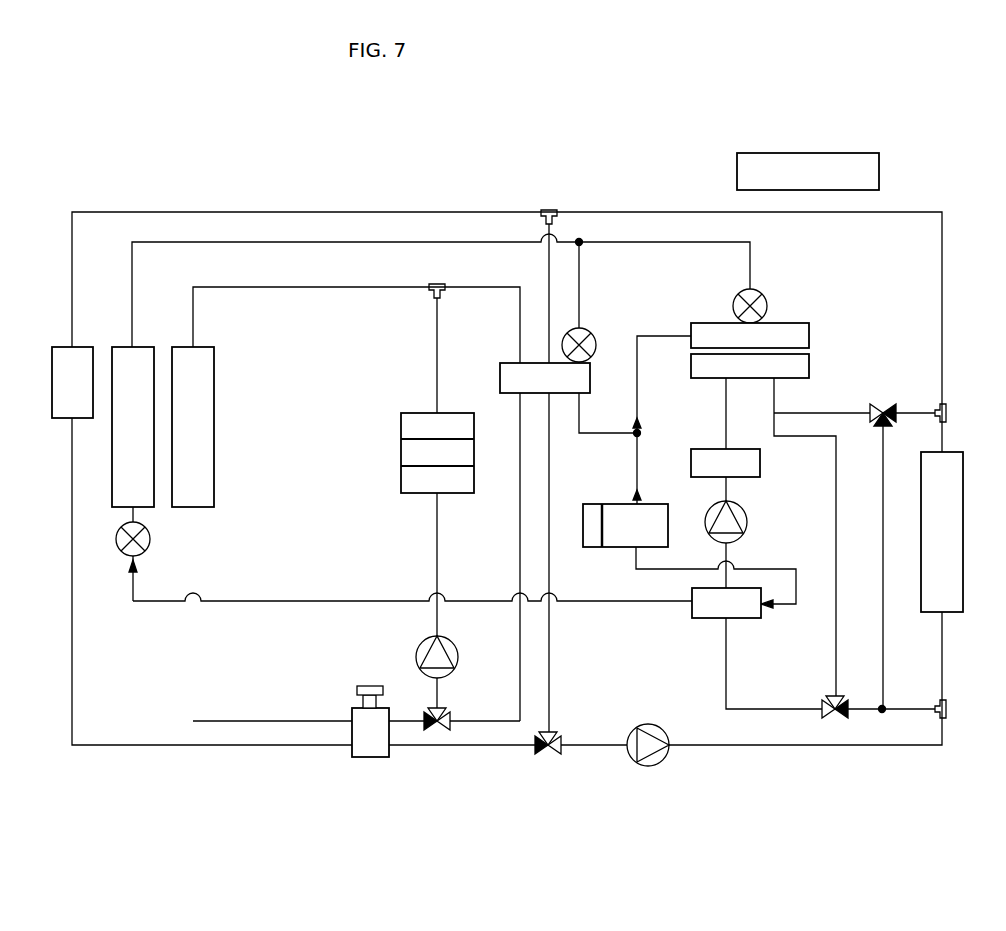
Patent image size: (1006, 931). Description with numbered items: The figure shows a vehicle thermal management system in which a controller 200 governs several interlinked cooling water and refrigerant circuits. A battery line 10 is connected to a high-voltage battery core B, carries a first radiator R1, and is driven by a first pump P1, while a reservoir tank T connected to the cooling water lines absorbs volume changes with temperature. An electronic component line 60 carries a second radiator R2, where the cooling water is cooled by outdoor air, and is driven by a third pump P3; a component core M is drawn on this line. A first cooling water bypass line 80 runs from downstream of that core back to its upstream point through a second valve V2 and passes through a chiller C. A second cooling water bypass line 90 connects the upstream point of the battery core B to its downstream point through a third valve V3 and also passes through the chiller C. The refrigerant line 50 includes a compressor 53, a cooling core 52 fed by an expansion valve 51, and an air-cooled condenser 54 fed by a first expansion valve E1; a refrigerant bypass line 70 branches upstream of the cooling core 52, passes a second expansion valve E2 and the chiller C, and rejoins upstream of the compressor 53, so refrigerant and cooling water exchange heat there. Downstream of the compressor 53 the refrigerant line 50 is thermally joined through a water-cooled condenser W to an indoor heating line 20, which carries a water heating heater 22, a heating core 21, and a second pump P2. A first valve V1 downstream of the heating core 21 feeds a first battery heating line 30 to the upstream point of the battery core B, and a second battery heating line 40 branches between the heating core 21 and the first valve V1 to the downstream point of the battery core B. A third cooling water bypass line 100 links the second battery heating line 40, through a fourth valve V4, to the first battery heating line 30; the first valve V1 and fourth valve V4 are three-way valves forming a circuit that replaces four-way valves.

The battery line 10 is at (420, 213).
The refrigerant line 50 is at (240, 242).
The electronic component line 60 is at (297, 287).
The air-cooled condenser 54 is at (145, 347).
The first radiator R1 is at (62, 347).
The second radiator R2 is at (214, 480).
The first expansion valve E1 is at (124, 556).
The second expansion valve E2 is at (594, 336).
The motor M is at (401, 453).
The chiller C is at (507, 363).
The second cooling water bypass line 90 is at (549, 268).
The refrigerant bypass line 70 is at (579, 268).
The first cooling water bypass line 80 is at (492, 722).
The compressor 53 is at (619, 504).
The expansion valve 51 is at (767, 306).
The cooling core 52 is at (809, 334).
The heating core 21 is at (809, 372).
The water heating heater 22 is at (700, 449).
The indoor heating line 20 is at (806, 436).
The second pump P2 is at (747, 522).
The water-cooled condenser W is at (694, 618).
The fourth valve V4 is at (870, 425).
The first battery heating line 30 is at (933, 408).
The high-voltage battery core B is at (952, 612).
The first valve V1 is at (828, 700).
The second battery heating line 40 is at (900, 709).
The third cooling water bypass line 100 is at (887, 668).
The first pump P1 is at (641, 768).
The third valve V3 is at (556, 758).
The third pump P3 is at (417, 652).
The second valve V2 is at (444, 735).
The reservoir tank T is at (372, 757).
The controller 200 is at (879, 172).